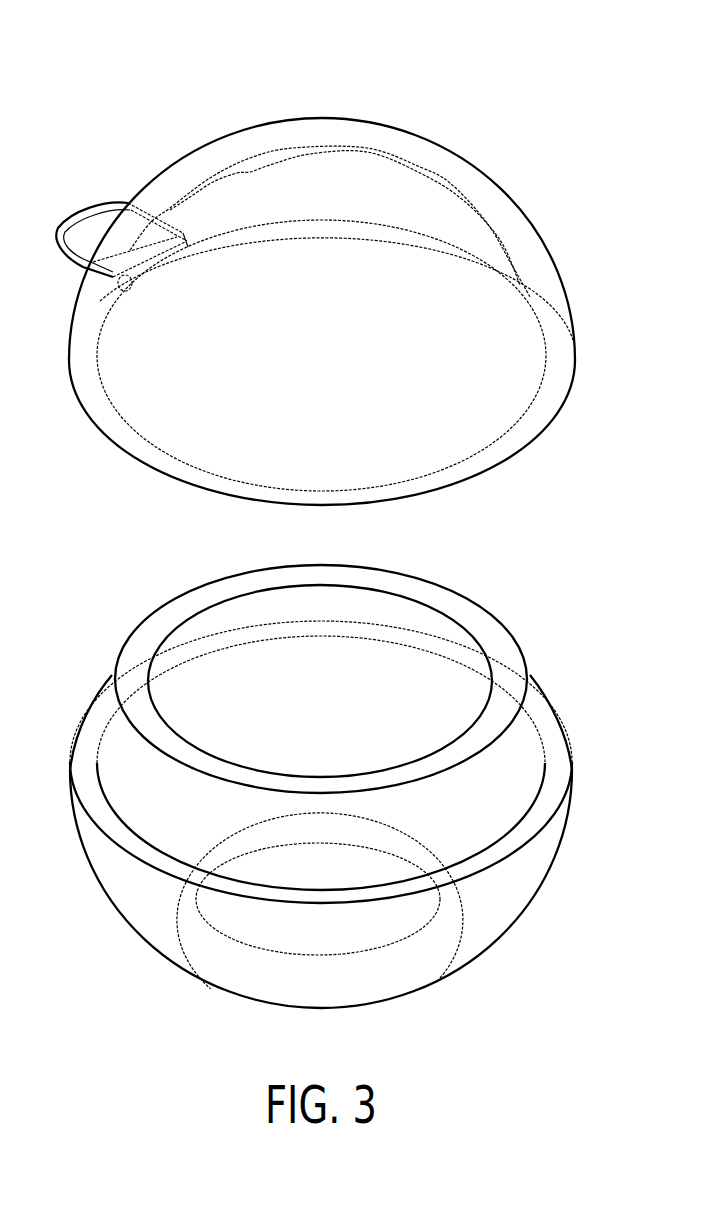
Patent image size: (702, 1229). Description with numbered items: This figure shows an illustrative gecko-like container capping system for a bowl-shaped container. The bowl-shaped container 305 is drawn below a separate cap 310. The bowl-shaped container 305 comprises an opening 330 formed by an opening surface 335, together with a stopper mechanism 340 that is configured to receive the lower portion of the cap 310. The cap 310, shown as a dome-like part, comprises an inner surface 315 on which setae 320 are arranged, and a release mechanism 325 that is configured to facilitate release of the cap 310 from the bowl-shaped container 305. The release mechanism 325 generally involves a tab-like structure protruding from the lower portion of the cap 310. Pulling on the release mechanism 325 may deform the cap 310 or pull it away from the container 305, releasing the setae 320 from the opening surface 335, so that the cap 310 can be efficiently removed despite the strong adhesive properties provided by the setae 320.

The bowl-shaped container 305 is at (309, 267).
The cap 310 is at (313, 785).
The inner surface 315 is at (407, 452).
The setae 320 is at (294, 147).
The release mechanism 325 is at (95, 215).
The opening 330 is at (438, 631).
The opening surface 335 is at (525, 733).
The stopper mechanism 340 is at (557, 782).